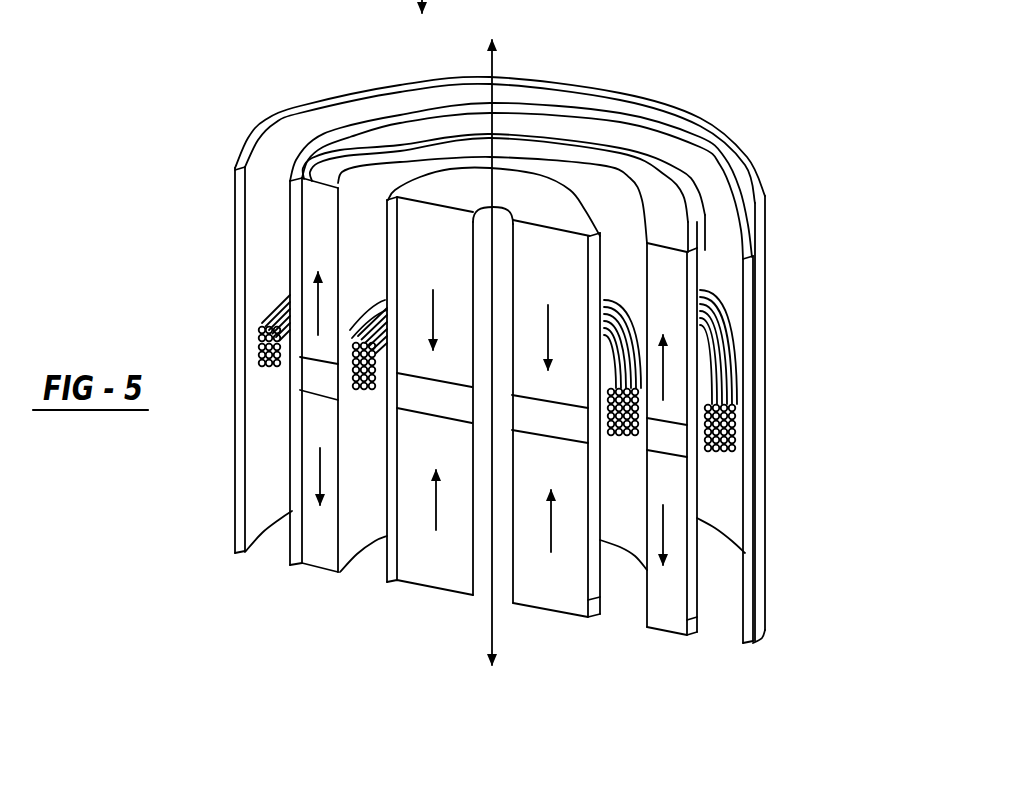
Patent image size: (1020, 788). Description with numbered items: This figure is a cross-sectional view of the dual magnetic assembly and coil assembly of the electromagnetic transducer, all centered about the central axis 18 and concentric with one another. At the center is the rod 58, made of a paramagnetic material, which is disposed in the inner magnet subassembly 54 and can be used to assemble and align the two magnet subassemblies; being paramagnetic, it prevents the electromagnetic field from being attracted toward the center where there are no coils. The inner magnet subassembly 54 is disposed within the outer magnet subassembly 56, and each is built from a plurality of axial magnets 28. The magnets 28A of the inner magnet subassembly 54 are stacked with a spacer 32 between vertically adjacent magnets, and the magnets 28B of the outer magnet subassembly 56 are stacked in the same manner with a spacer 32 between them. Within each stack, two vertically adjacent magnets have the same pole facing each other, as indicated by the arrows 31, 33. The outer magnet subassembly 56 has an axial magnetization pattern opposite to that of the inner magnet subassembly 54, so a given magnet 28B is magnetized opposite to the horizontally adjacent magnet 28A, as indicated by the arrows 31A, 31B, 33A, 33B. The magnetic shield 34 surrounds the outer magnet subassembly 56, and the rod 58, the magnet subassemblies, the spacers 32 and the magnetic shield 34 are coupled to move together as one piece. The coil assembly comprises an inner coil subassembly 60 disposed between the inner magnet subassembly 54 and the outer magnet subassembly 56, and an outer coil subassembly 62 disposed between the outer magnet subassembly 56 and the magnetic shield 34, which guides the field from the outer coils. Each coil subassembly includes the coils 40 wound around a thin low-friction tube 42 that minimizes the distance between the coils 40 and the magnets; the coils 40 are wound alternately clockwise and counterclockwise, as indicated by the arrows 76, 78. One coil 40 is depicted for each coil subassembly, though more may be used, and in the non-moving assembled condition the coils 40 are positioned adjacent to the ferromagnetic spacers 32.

The central axis 18 is at (493, 185).
The axial magnets 28 is at (417, 220).
The magnets of the inner magnet subassembly 28A is at (442, 218).
The magnets of the outer magnet subassembly 28B is at (300, 212).
The arrow 31 is at (548, 333).
The arrow 31A is at (437, 306).
The arrow 31B is at (322, 463).
The spacer 32 is at (663, 437).
The arrow 33 is at (553, 530).
The arrow 33A is at (433, 503).
The arrow 33B is at (312, 297).
The magnetic shield 34 is at (275, 486).
The coils 40 is at (278, 318).
The tube 42 is at (607, 590).
The inner magnet subassembly 54 is at (557, 197).
The outer magnet subassembly 56 is at (677, 200).
The rod 58 is at (480, 557).
The inner coil subassembly 60 is at (625, 303).
The outer coil subassembly 62 is at (722, 463).
The arrow 76 is at (628, 322).
The arrow 78 is at (260, 296).